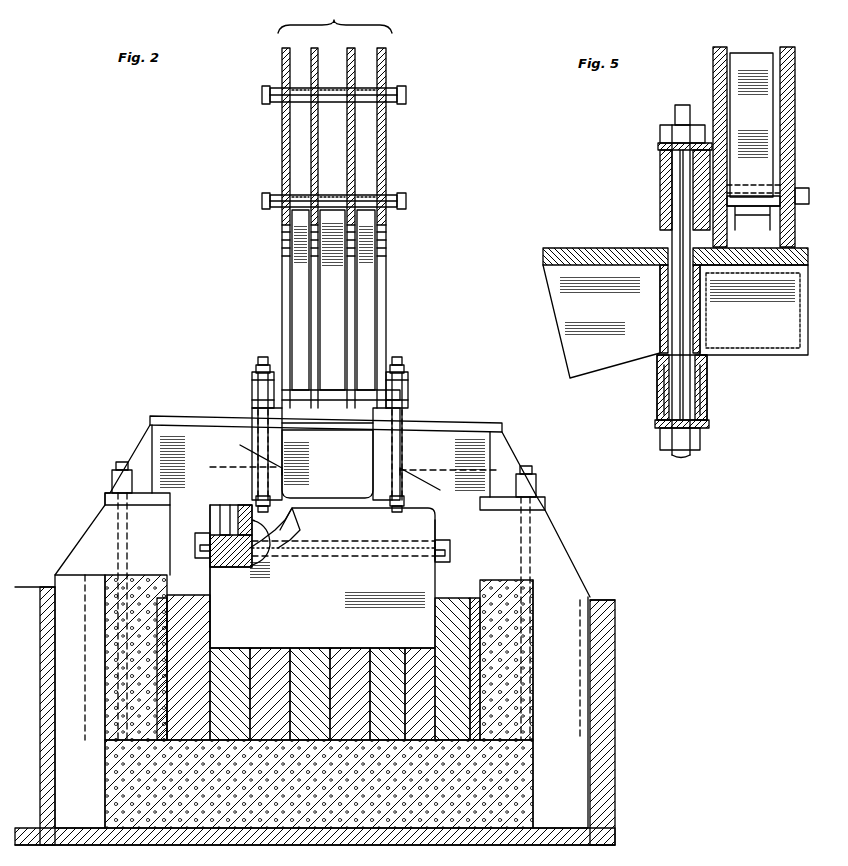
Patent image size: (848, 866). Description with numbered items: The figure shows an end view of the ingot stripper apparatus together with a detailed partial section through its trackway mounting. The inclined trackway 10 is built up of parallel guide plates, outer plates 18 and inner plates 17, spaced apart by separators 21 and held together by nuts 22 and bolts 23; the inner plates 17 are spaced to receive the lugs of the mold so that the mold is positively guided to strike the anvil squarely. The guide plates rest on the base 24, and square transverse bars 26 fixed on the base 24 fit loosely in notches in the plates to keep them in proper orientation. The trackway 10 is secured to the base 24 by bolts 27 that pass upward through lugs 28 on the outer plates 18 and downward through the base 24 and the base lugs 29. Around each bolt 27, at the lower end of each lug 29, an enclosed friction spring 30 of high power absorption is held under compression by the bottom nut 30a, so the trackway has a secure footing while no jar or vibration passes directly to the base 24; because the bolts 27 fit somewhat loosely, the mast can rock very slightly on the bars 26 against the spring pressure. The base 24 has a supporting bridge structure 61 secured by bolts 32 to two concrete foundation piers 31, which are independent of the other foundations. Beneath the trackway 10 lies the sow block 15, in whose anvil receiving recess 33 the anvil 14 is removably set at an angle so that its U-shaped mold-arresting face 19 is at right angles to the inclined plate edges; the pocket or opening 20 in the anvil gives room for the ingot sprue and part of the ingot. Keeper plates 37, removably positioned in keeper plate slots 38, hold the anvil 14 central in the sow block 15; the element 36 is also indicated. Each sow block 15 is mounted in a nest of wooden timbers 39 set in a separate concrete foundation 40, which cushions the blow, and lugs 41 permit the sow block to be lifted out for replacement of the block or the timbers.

In FIG. 2, the inclined trackway 10 is at (312, 28).
In FIG. 2, the anvil 14 is at (250, 432).
In FIG. 2, the sow block 15 is at (322, 578).
In FIG. 2, the inner guide plate 17 is at (347, 52).
In FIG. 5, the inner guide plate 17 is at (805, 45).
In FIG. 2, the outer guide plate 18 is at (282, 52).
In FIG. 5, the outer guide plate 18 is at (713, 81).
In FIG. 2, the mold-arresting face 19 is at (252, 412).
In FIG. 2, the pocket or opening 20 is at (327, 464).
In FIG. 2, the separator 21 is at (341, 231).
In FIG. 5, the separator 21 is at (742, 213).
In FIG. 2, the nut 22 is at (270, 90).
In FIG. 5, the nut 22 is at (727, 168).
In FIG. 2, the bolt 23 is at (266, 104).
In FIG. 5, the bolt 23 is at (803, 188).
In FIG. 2, the base 24 is at (465, 422).
In FIG. 5, the base 24 is at (603, 275).
In FIG. 2, the square transverse bar 26 is at (358, 428).
In FIG. 5, the square transverse bar 26 is at (748, 268).
In FIG. 2, the bolt 27 is at (263, 357).
In FIG. 5, the bolt 27 is at (675, 180).
In FIG. 2, the lug 28 is at (252, 378).
In FIG. 5, the lug 28 is at (660, 156).
In FIG. 2, the base lug 29 is at (282, 464).
In FIG. 5, the base lug 29 is at (660, 325).
In FIG. 5, the enclosed friction spring 30 is at (707, 398).
In FIG. 2, the bottom nut 30a is at (258, 504).
In FIG. 5, the bottom nut 30a is at (700, 442).
In FIG. 2, the concrete foundation pier 31 is at (321, 701).
In FIG. 2, the bolt 32 is at (112, 517).
In FIG. 2, the anvil receiving recess 33 is at (238, 516).
In FIG. 2, the pad 36 is at (275, 524).
In FIG. 2, the keeper plate 37 is at (280, 552).
In FIG. 2, the keeper plate slot 38 is at (252, 560).
In FIG. 2, the wooden timbers 39 is at (318, 667).
In FIG. 2, the concrete foundation 40 is at (319, 784).
In FIG. 2, the lug 41 is at (195, 553).
In FIG. 2, the supporting bridge structure 61 is at (321, 461).
In FIG. 5, the supporting bridge structure 61 is at (751, 335).